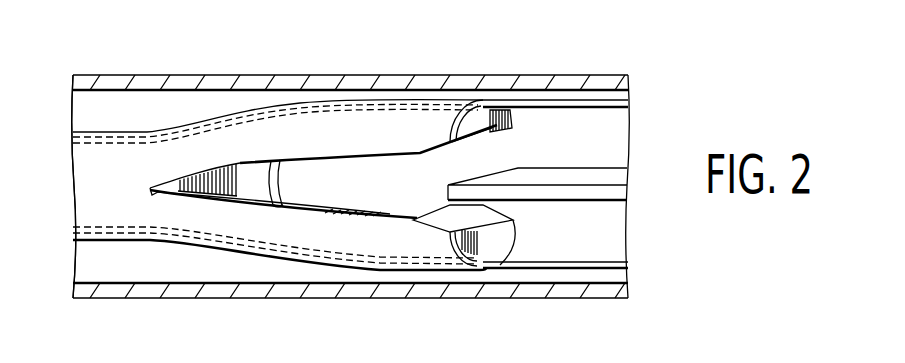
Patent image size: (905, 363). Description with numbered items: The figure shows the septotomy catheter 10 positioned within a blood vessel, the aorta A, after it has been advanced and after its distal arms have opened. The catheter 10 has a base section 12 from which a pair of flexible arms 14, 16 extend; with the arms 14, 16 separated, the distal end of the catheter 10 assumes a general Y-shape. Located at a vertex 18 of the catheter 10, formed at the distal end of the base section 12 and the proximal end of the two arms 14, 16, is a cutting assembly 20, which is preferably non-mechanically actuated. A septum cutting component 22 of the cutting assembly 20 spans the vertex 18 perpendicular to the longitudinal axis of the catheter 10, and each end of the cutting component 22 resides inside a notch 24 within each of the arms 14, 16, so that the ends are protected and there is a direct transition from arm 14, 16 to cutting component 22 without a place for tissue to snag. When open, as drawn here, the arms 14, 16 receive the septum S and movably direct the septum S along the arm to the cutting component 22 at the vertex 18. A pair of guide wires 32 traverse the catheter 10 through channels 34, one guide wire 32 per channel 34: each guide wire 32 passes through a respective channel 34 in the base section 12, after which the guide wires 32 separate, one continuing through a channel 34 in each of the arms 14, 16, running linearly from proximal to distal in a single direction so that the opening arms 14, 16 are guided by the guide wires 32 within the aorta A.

The septotomy catheter 10 is at (330, 168).
The base section 12 is at (115, 194).
The flexible arm 14 is at (396, 139).
The flexible arm 16 is at (372, 253).
The vertex 18 is at (157, 193).
The cutting assembly 20 is at (267, 159).
The septum cutting component 22 is at (241, 181).
The notch 24 is at (298, 203).
The guide wire 32 is at (575, 110).
The channel 34 is at (424, 100).
The aorta A is at (570, 76).
The septum S is at (612, 180).